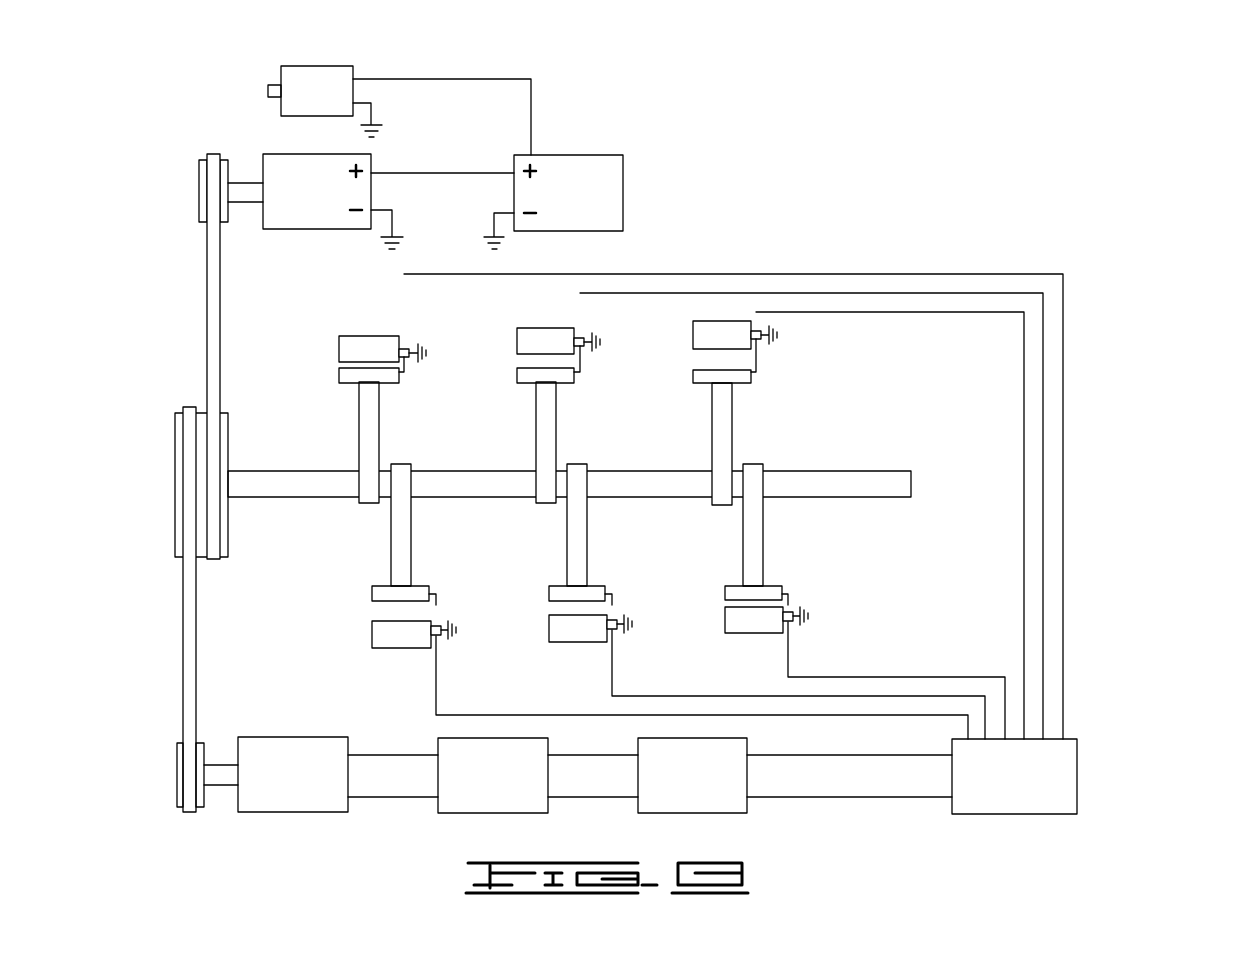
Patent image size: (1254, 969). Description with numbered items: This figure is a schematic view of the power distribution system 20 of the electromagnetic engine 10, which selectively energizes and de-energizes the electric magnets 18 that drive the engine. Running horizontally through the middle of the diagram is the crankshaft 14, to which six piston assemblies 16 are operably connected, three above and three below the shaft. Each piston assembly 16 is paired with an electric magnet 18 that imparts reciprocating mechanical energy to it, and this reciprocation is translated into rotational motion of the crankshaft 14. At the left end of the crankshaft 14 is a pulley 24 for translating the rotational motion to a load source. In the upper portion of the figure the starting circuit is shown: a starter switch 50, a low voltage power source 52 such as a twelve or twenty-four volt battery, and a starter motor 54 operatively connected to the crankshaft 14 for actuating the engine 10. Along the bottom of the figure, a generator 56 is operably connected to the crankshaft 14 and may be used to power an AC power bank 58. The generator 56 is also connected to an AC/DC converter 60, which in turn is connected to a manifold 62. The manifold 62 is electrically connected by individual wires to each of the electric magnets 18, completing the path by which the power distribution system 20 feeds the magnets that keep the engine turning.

The electromagnetic engine 10 is at (900, 178).
The crankshaft 14 is at (895, 472).
The piston assembly 16 is at (350, 424).
The electric magnet 18 is at (359, 336).
The power distribution system 20 is at (1129, 778).
The pulley 24 is at (175, 450).
The starter switch 50 is at (290, 66).
The low voltage power source 52 is at (623, 185).
The starter motor 54 is at (276, 154).
The generator 56 is at (280, 813).
The AC power bank 58 is at (477, 814).
The AC/DC converter 60 is at (732, 814).
The manifold 62 is at (1020, 815).